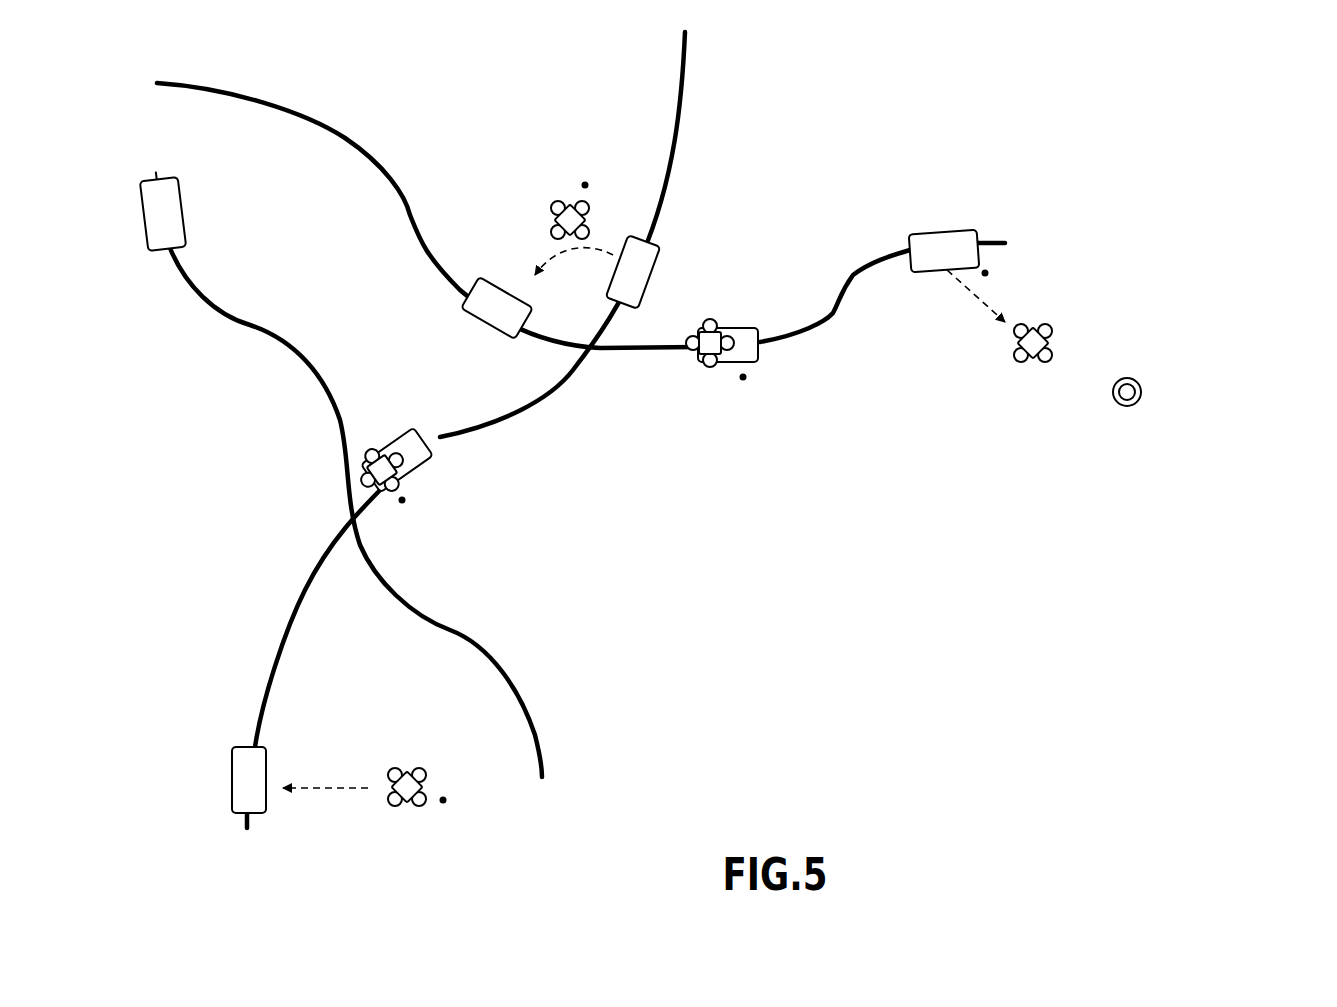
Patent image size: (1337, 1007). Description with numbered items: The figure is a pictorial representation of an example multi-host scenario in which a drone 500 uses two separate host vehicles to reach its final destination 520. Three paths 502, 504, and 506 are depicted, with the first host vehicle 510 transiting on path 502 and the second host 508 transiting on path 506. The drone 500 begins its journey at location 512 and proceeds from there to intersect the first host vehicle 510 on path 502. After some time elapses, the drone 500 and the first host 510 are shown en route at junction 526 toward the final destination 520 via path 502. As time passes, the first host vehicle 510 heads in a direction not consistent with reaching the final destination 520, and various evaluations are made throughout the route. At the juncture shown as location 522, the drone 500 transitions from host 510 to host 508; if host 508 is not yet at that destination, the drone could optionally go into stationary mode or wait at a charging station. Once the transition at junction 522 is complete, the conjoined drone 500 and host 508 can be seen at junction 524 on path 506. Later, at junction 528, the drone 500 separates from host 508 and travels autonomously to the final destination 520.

The drone 500 is at (407, 763).
The path 502 is at (300, 597).
The path 504 is at (223, 317).
The path 506 is at (340, 133).
The host 508 is at (485, 325).
The first host vehicle 510 is at (413, 440).
The location 512 is at (717, 785).
The final destination 520 is at (1127, 380).
The location 522 is at (537, 142).
The junction 524 is at (840, 424).
The junction 526 is at (552, 545).
The junction 528 is at (1263, 258).